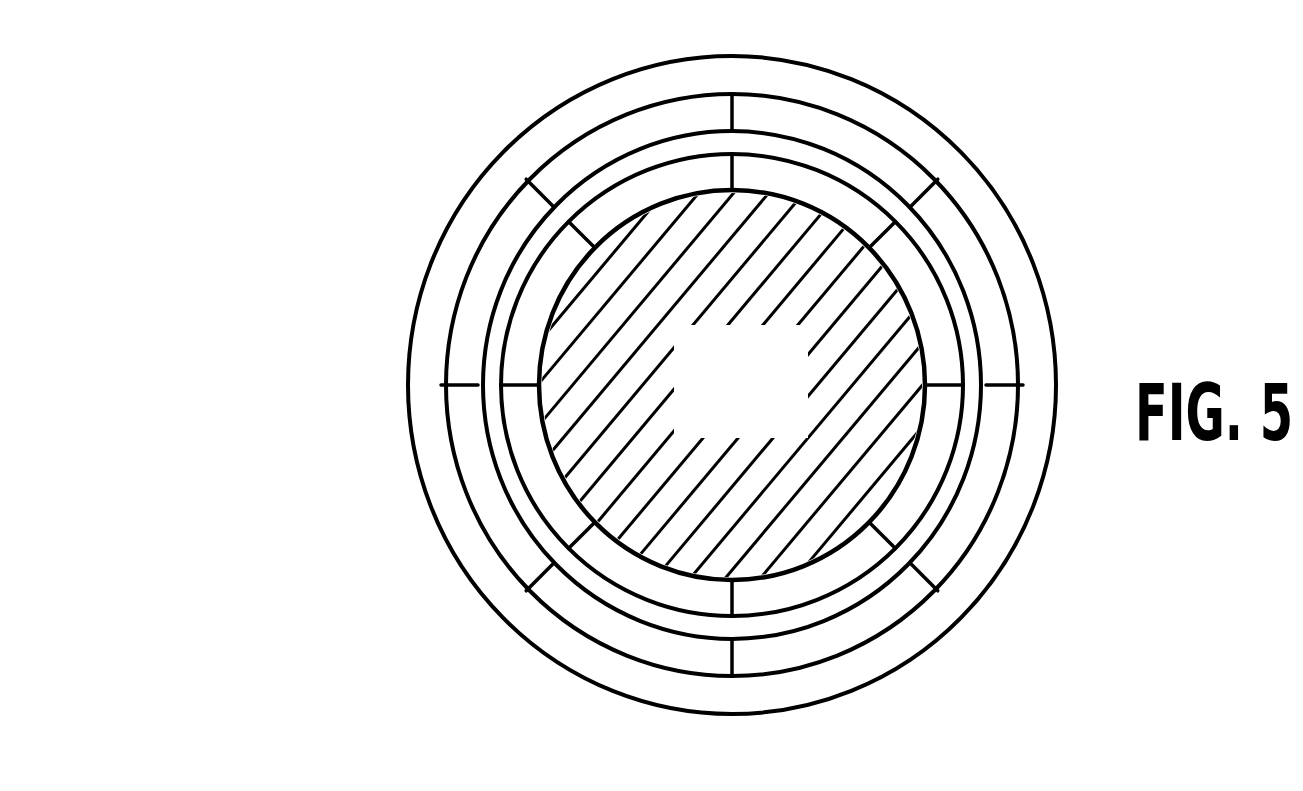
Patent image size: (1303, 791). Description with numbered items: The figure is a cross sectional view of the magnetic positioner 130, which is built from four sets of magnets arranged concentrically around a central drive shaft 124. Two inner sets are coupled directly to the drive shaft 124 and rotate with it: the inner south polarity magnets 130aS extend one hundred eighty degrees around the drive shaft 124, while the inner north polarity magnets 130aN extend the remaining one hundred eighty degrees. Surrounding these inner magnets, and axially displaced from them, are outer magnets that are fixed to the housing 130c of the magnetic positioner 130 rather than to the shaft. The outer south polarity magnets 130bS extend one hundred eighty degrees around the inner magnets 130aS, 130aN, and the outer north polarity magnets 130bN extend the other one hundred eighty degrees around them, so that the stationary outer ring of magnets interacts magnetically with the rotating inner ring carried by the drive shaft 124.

The magnetic positioner 130 is at (254, 237).
The inner north polarity magnets 130aN is at (513, 362).
The inner south polarity magnets 130aS is at (760, 595).
The outer north polarity magnets 130bN is at (463, 437).
The outer south polarity magnets 130bS is at (563, 177).
The housing 130c is at (1030, 303).
The drive shaft 124 is at (563, 442).